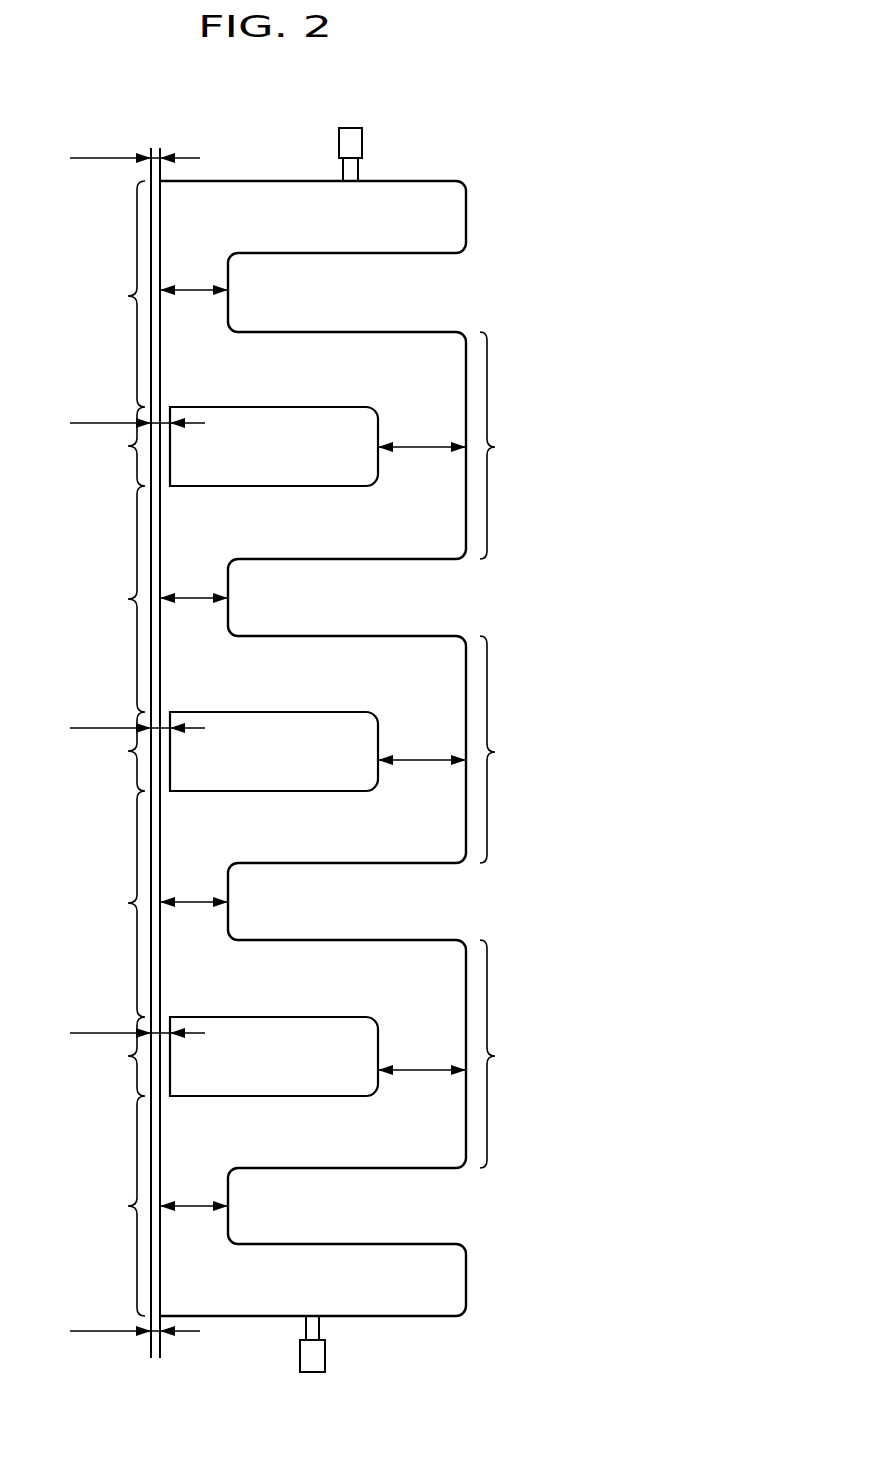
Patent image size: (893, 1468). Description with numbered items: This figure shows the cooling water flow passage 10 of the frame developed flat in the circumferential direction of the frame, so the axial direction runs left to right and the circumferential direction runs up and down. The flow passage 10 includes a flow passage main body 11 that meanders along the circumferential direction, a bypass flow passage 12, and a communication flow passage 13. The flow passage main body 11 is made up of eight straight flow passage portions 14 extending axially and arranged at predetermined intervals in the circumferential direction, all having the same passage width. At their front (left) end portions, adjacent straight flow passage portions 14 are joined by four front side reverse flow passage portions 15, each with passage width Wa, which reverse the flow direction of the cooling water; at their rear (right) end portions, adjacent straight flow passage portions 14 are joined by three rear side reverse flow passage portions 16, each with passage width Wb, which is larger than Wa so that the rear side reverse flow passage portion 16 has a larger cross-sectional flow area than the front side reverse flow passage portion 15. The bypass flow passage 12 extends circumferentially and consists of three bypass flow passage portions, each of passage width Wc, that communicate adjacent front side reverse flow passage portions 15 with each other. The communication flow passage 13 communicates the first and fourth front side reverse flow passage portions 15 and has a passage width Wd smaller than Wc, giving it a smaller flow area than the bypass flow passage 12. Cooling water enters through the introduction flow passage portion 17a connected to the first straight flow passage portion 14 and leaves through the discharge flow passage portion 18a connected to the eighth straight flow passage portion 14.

The flow passage 10 is at (176, 131).
The flow passage main body 11 is at (460, 169).
The bypass flow passage 12 is at (203, 751).
The communication flow passage 13 is at (149, 163).
The straight flow passage portion 14 is at (257, 180).
The front side reverse flow passage portion 15 is at (83, 748).
The rear side reverse flow passage portion 16 is at (537, 750).
The introduction flow passage portion 17a is at (364, 138).
The discharge flow passage portion 18a is at (300, 1356).